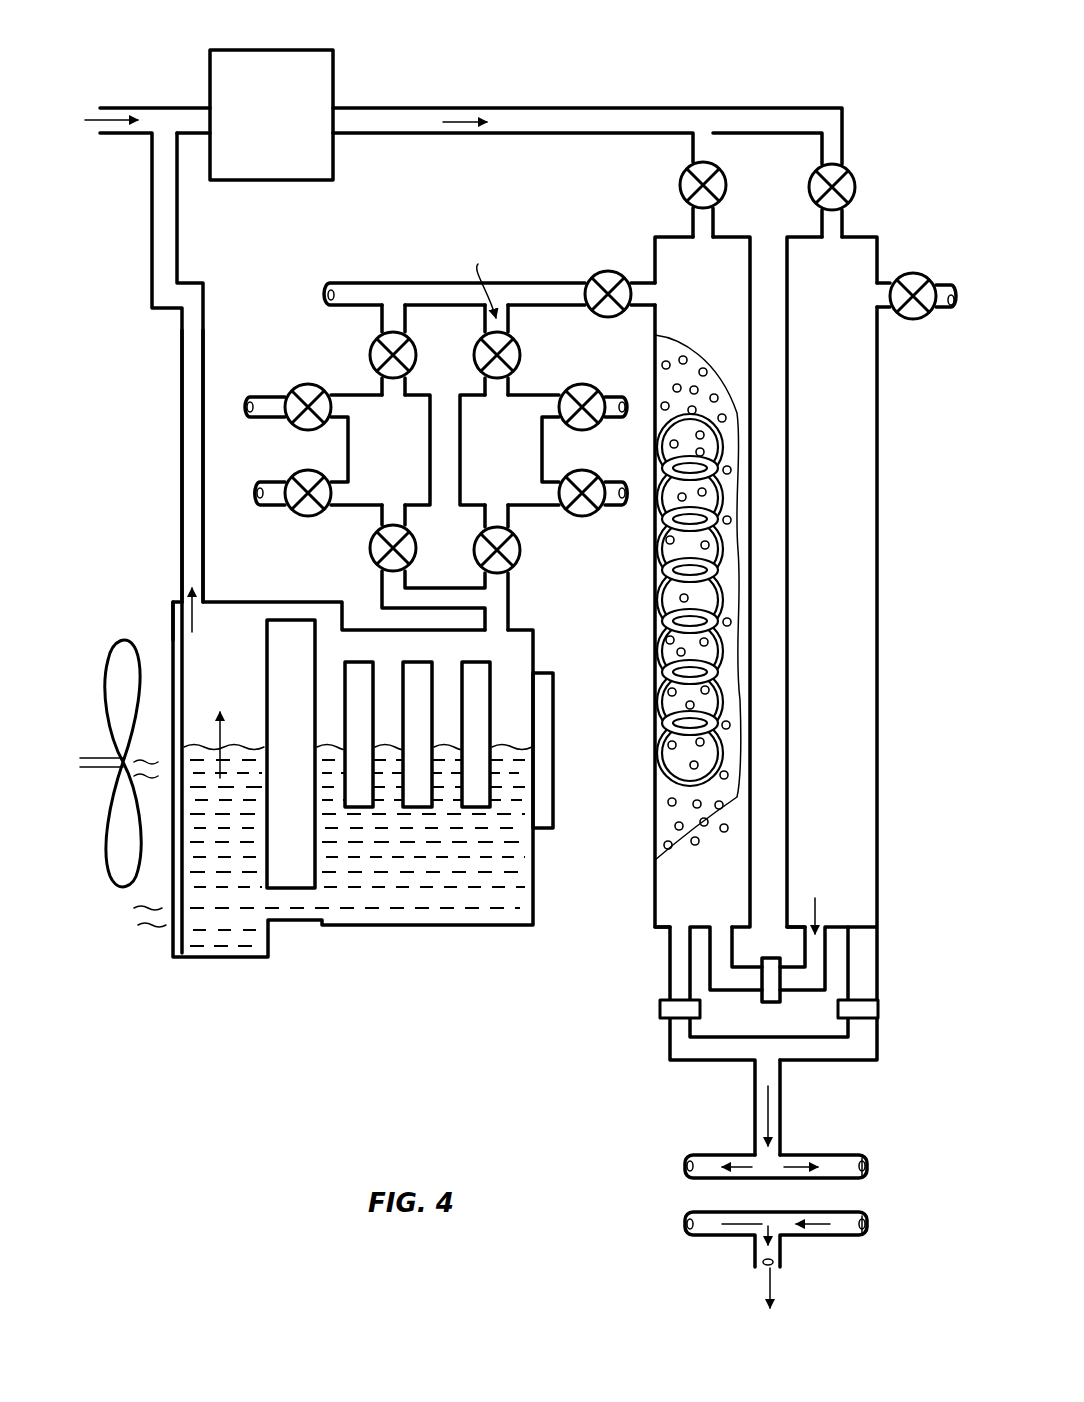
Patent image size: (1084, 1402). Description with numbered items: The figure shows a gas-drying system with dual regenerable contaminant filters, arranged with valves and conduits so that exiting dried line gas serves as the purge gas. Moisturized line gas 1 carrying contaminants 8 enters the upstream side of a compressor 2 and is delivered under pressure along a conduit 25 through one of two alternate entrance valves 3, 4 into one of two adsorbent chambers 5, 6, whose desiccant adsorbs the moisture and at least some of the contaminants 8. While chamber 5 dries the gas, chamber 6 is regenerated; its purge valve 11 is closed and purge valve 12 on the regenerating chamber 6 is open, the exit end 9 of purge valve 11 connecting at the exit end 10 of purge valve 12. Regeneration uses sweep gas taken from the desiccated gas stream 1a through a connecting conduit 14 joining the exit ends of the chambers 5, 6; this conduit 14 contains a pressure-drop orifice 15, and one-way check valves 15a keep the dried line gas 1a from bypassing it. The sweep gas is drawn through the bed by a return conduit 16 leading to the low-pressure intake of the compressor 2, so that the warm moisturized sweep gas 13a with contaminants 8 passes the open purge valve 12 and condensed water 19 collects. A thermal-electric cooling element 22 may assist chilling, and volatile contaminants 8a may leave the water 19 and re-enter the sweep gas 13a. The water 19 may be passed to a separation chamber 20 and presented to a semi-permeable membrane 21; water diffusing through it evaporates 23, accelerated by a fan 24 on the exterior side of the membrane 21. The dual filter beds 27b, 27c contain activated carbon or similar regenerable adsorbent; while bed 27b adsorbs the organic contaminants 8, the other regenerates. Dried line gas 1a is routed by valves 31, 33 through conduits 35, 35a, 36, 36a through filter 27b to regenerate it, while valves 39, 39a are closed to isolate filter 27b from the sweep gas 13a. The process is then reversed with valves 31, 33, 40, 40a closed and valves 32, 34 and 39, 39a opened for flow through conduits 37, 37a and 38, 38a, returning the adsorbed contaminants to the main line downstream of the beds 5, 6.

The moisturized line gas 1 is at (94, 152).
The contaminants 8 is at (208, 628).
The compressor 2 is at (262, 52).
The pipe 25 is at (661, 108).
The entrance valve 4 is at (726, 194).
The entrance valve 3 is at (856, 182).
The purge valve 11 is at (928, 276).
The exit end of purge valve 11 9 is at (958, 306).
The exit end of purge valve 12 10 is at (328, 296).
The moisturized sweep gas 13a is at (462, 282).
The purge valve 12 is at (612, 272).
The return conduit 16 is at (180, 420).
The valve 39 is at (374, 342).
The valve 40 is at (518, 352).
The valve 31 is at (294, 386).
The filter bed 27b is at (357, 394).
The filter bed 27c is at (527, 394).
The valve 32 is at (592, 390).
The conduit 35a is at (247, 410).
The conduit 37a is at (626, 412).
The valve 33 is at (318, 472).
The conduit 36a is at (257, 498).
The valve 34 is at (582, 510).
The conduit 38a is at (628, 498).
The valve 39a is at (370, 550).
The valve 40a is at (518, 566).
The separation chamber 20 is at (242, 602).
The semi-permeable membrane 21 is at (176, 632).
The thermal-electric cooling element 22 is at (541, 828).
The liquified water 19 is at (406, 916).
The volatile contaminants 8a is at (218, 732).
The evaporation 23 is at (150, 760).
The fan 24 is at (118, 866).
The adsorbent chamber 6 is at (750, 860).
The adsorbent chamber 5 is at (878, 860).
The connecting conduit 14 is at (800, 978).
The pressure-drop orifice 15 is at (764, 1004).
The one-way check valve 15a is at (658, 1010).
The desiccated gas stream 1a is at (815, 906).
The conduit 35 is at (682, 1166).
The conduit 37 is at (892, 1146).
The conduit 36 is at (682, 1220).
The conduit 38 is at (866, 1226).